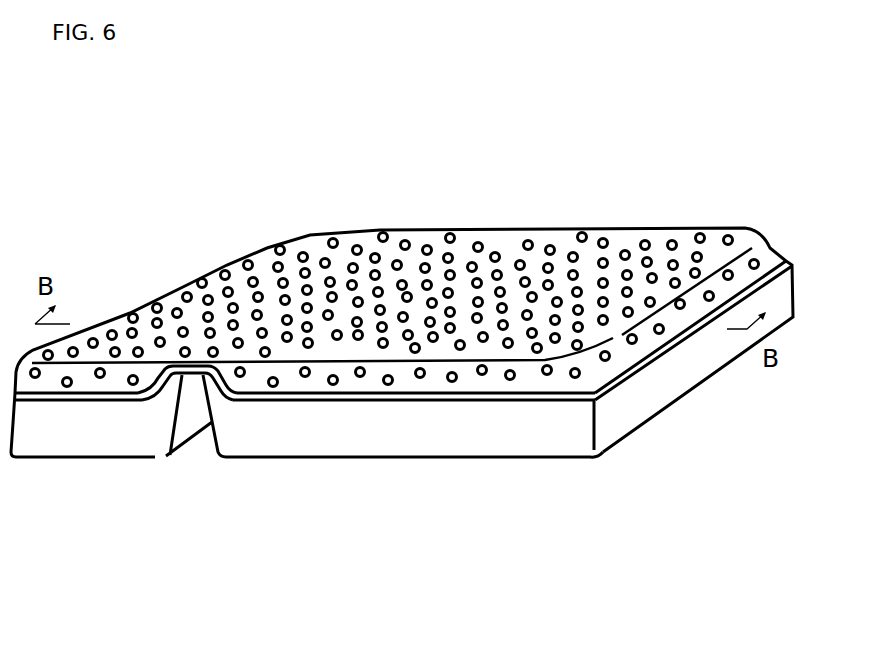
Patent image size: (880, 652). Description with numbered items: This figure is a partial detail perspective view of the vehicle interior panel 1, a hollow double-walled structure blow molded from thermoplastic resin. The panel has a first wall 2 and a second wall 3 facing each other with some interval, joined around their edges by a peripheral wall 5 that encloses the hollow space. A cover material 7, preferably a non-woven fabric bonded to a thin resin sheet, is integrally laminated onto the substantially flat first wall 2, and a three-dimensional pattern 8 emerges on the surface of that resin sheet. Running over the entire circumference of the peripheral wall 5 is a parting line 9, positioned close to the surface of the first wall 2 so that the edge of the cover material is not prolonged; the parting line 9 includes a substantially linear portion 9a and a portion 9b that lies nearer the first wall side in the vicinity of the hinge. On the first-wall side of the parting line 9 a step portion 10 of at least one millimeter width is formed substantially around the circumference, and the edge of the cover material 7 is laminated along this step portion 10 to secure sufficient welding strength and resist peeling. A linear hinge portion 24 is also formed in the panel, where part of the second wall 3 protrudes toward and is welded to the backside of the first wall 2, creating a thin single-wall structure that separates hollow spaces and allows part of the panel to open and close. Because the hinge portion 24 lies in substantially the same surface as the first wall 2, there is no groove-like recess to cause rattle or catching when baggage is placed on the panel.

The vehicle interior panel 1 is at (499, 193).
The first wall 2 is at (613, 250).
The second wall 3 is at (312, 458).
The peripheral wall 5 is at (395, 430).
The cover material 7 is at (565, 230).
The three-dimensional pattern 8 is at (476, 240).
The parting line 9 is at (263, 402).
The substantially linear portion 9a is at (92, 401).
The portion 9b is at (168, 380).
The step portion 10 is at (663, 355).
The hinge portion 24 is at (190, 377).